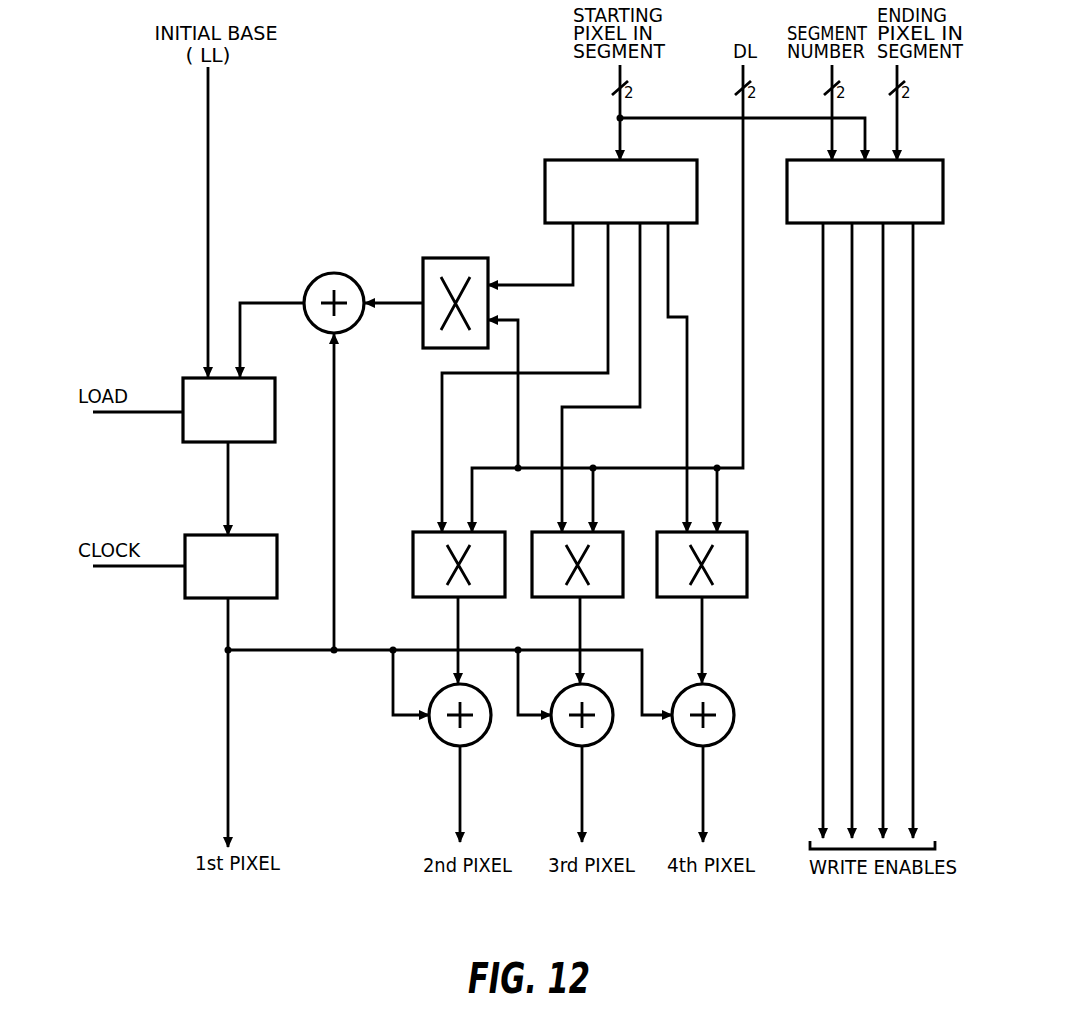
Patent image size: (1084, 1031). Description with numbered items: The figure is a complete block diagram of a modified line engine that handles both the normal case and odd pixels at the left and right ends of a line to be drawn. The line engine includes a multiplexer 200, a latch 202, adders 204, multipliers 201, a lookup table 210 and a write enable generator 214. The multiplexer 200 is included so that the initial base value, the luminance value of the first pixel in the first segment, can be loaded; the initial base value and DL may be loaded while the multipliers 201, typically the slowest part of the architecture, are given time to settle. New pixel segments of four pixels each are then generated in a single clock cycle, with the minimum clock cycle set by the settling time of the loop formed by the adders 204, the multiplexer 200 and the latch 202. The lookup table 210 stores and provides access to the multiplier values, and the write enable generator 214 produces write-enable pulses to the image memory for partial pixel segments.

The multiplexer 200 is at (247, 443).
The multipliers 201 is at (460, 258).
The latch 202 is at (245, 534).
The adders 204 is at (334, 273).
The lookup table 210 is at (677, 225).
The write enable generator 214 is at (924, 225).